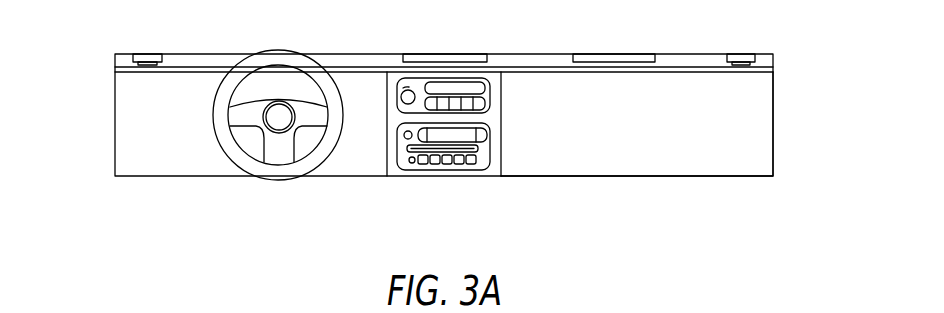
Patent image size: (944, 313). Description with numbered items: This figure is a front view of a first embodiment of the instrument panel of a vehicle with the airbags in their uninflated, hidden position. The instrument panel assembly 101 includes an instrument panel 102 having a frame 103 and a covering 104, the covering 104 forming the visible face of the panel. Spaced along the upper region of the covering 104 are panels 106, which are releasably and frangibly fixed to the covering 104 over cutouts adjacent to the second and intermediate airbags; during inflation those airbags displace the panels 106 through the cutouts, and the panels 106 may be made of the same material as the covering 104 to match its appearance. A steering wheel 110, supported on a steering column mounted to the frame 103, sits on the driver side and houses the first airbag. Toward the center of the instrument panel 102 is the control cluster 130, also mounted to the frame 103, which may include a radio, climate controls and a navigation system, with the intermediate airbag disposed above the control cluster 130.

The instrument panel assembly 101 is at (788, 83).
The instrument panel 102 is at (110, 100).
The frame 103 is at (512, 54).
The covering 104 is at (758, 93).
The panels 106 is at (147, 54).
The steering wheel 110 is at (266, 50).
The control cluster 130 is at (397, 78).